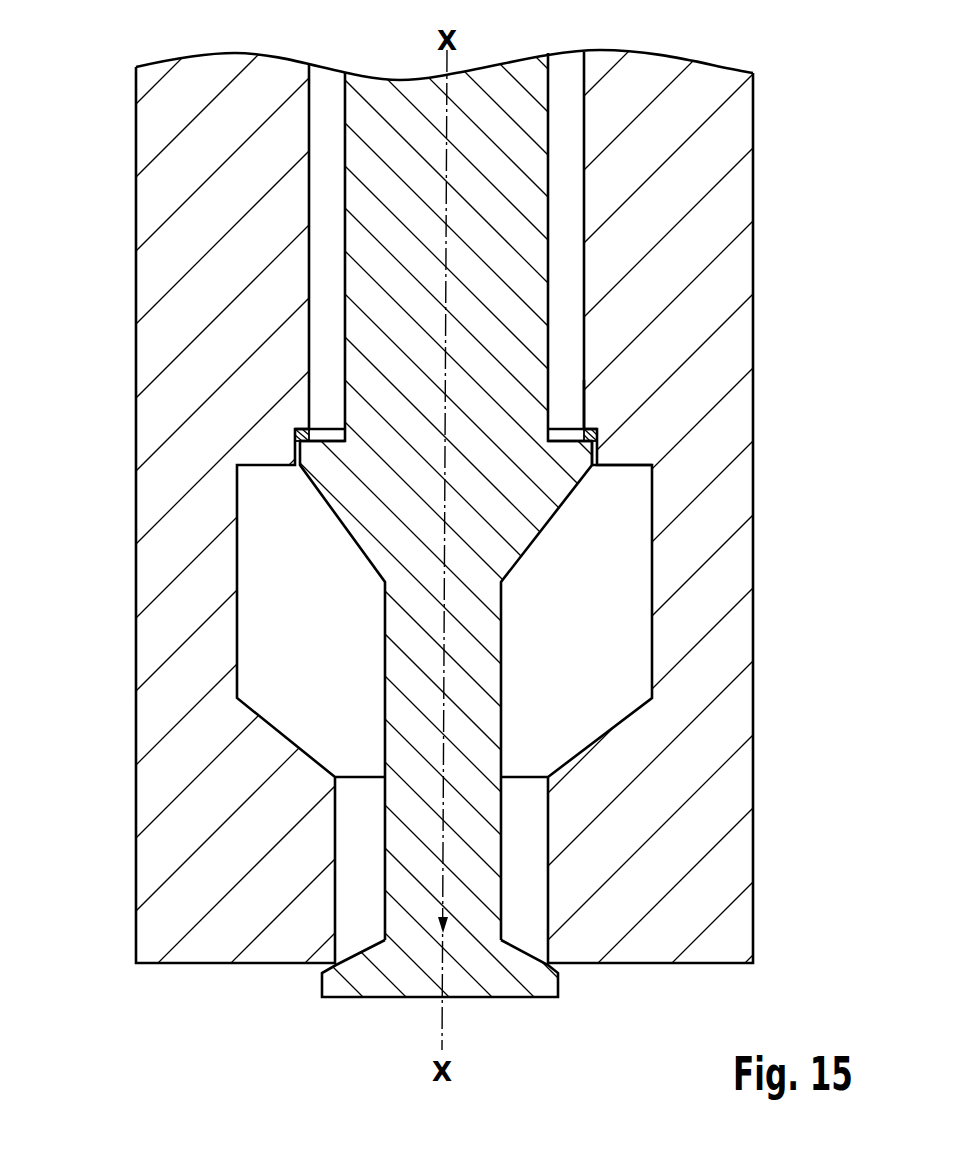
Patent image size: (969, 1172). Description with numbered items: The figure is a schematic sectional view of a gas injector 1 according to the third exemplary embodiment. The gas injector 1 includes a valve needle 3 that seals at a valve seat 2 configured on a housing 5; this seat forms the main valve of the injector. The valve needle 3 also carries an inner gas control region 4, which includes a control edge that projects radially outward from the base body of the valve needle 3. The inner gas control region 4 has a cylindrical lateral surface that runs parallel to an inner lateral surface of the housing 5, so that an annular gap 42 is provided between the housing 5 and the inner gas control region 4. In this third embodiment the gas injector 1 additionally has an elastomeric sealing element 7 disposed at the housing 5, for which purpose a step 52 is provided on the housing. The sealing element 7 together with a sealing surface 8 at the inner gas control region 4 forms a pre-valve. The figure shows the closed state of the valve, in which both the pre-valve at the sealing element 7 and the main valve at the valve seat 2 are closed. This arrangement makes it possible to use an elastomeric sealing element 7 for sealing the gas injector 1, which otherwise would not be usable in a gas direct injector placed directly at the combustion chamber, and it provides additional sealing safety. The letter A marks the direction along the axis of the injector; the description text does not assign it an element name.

The gas injector 1 is at (122, 80).
The valve seat 2 is at (342, 970).
The valve needle 3 is at (483, 892).
The inner gas control region 4 is at (580, 421).
The housing 5 is at (710, 647).
The elastomeric sealing element 7 is at (597, 435).
The sealing surface 8 is at (300, 429).
The annular gap 42 is at (595, 452).
The step 52 is at (295, 445).
The flow direction A is at (442, 898).